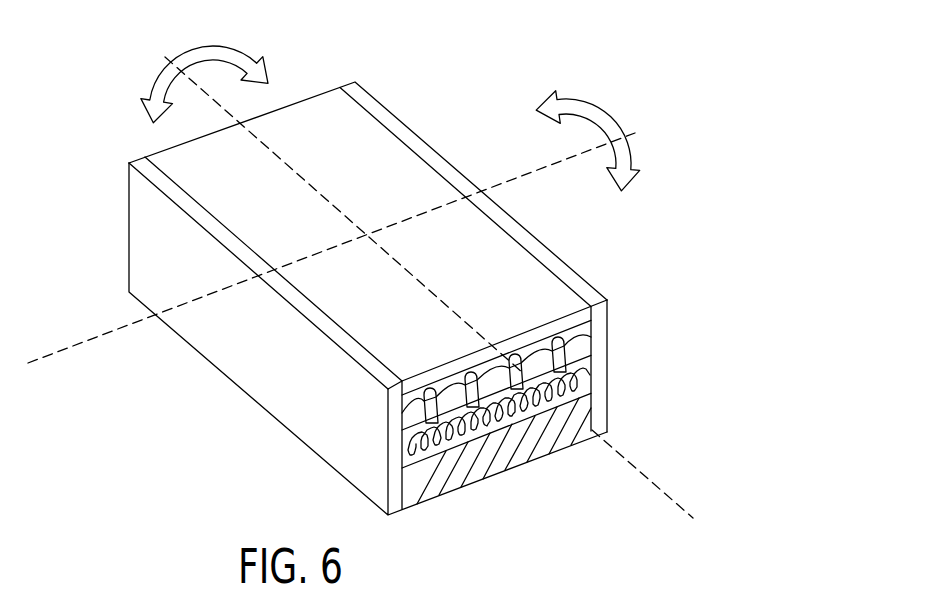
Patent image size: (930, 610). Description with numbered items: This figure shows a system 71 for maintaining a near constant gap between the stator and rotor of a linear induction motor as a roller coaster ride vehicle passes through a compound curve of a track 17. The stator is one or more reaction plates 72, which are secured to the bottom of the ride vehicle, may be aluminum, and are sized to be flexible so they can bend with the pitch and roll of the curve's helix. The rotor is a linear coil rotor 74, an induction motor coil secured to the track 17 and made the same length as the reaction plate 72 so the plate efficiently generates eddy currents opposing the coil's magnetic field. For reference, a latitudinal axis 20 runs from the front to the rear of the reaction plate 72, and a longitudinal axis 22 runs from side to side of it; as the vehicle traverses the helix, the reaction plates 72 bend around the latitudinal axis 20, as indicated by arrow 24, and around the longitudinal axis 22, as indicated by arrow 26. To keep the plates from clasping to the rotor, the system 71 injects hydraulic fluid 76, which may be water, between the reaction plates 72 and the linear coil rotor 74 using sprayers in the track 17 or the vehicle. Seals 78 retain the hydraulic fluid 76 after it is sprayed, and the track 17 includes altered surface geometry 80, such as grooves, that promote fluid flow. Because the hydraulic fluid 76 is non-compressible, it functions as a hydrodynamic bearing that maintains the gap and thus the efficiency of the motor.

The track 17 is at (428, 518).
The latitudinal axis 20 is at (63, 350).
The longitudinal axis 22 is at (673, 498).
The arrow 24 is at (605, 118).
The arrow 26 is at (193, 48).
The system 71 is at (445, 97).
The reaction plate 72 is at (383, 343).
The linear coil rotor 74 is at (480, 440).
The hydraulic fluid 76 is at (583, 343).
The seal 78 is at (612, 418).
The altered surface geometry 80 is at (410, 440).